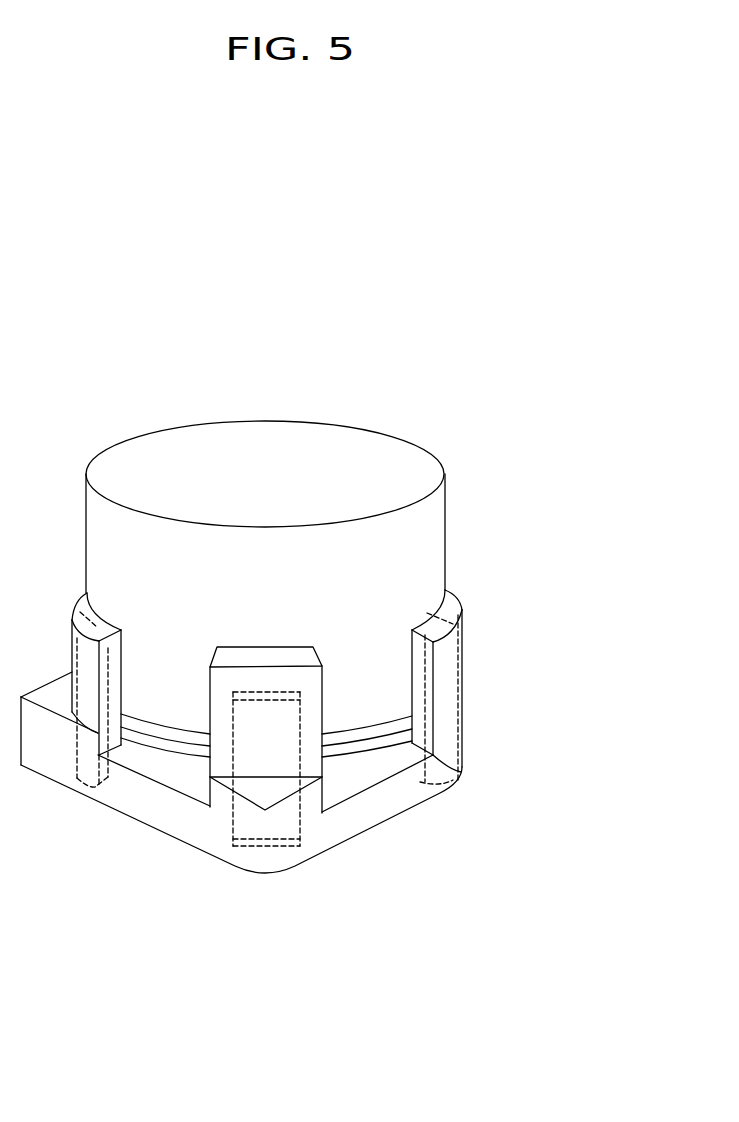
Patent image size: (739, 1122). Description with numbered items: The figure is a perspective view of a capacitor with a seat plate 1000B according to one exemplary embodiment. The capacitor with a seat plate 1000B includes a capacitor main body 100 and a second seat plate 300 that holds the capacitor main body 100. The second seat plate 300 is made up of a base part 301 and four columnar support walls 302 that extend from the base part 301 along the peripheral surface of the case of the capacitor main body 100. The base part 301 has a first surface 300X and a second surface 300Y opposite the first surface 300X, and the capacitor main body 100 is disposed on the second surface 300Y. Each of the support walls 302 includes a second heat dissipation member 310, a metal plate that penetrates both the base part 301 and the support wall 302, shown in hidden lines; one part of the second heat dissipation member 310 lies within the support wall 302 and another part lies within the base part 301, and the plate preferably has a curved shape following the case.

The capacitor with a seat plate 1000B is at (312, 295).
The capacitor main body 100 is at (355, 478).
The second seat plate 300 is at (570, 641).
The base part 301 is at (372, 768).
The support wall 302 is at (460, 603).
The second heat dissipation member 310 is at (253, 820).
The first surface 300X is at (320, 864).
The second surface 300Y is at (335, 797).